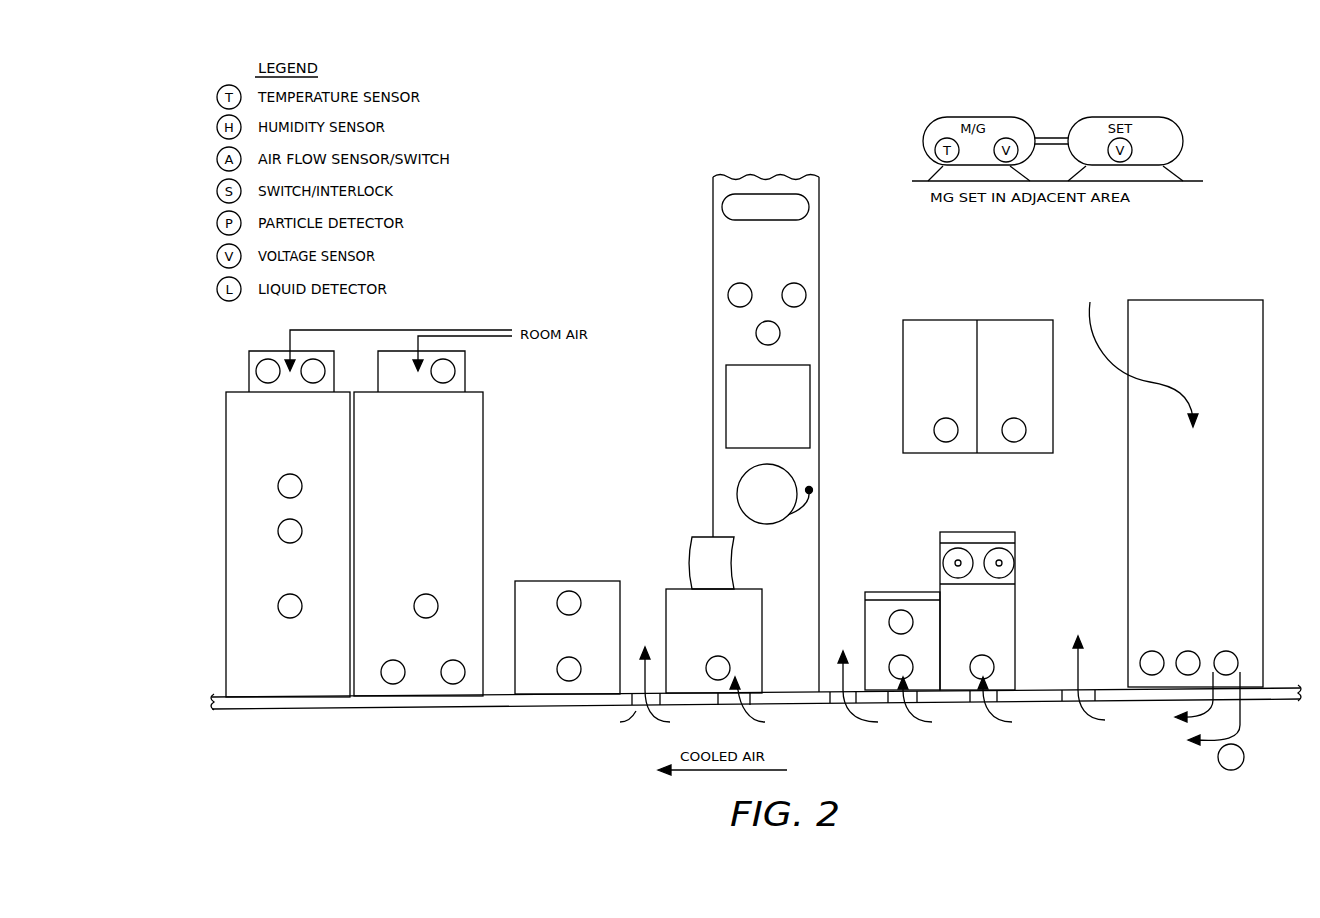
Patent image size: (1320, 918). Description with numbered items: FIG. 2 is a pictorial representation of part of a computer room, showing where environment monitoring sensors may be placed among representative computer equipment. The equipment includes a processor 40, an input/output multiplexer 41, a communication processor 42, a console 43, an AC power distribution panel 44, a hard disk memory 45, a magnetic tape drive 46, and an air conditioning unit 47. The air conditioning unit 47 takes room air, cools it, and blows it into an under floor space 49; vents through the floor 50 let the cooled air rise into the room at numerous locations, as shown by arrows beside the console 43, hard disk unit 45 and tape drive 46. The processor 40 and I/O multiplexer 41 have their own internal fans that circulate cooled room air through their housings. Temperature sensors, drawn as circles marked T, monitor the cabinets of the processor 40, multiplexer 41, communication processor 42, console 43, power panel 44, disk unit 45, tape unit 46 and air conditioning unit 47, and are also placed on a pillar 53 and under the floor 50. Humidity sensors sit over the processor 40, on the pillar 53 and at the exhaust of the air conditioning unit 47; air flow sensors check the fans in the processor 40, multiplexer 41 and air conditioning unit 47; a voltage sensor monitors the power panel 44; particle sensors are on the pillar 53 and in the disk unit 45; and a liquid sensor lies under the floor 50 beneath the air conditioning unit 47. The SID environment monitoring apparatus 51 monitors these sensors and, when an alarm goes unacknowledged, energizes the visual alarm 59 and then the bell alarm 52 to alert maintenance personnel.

The processor 40 is at (227, 392).
The input/output multiplexer 41 is at (484, 392).
The communication processor 42 is at (617, 583).
The console 43 is at (750, 589).
The AC power distribution panel 44 is at (950, 453).
The hard disk memory 45 is at (866, 606).
The magnetic tape drive 46 is at (1016, 603).
The air conditioning unit 47 is at (1212, 300).
The under floor space 49 is at (432, 761).
The floor 50 is at (795, 705).
The SID 2000 apparatus 51 is at (812, 392).
The bell alarm 52 is at (794, 483).
The pillar 53 is at (819, 235).
The visual alarm 59 is at (806, 195).